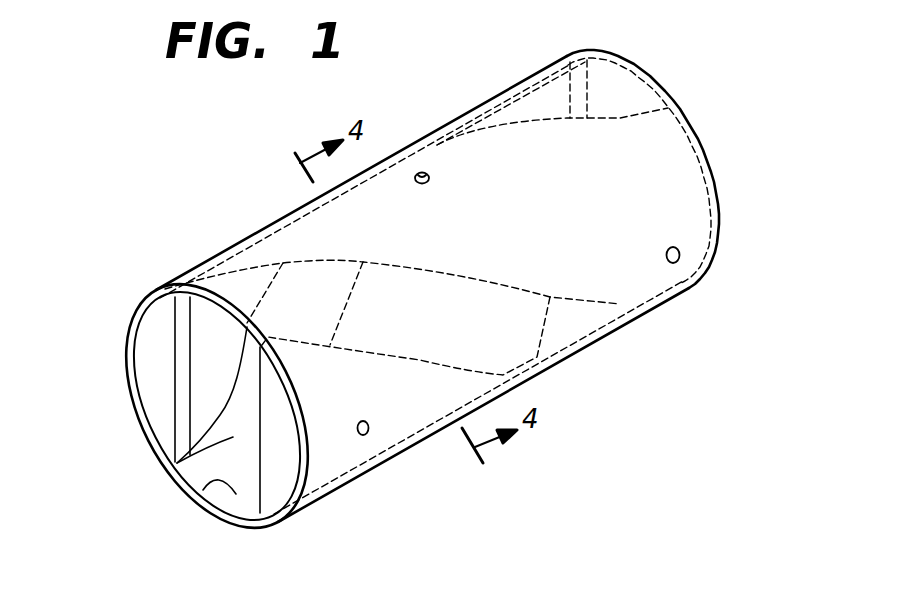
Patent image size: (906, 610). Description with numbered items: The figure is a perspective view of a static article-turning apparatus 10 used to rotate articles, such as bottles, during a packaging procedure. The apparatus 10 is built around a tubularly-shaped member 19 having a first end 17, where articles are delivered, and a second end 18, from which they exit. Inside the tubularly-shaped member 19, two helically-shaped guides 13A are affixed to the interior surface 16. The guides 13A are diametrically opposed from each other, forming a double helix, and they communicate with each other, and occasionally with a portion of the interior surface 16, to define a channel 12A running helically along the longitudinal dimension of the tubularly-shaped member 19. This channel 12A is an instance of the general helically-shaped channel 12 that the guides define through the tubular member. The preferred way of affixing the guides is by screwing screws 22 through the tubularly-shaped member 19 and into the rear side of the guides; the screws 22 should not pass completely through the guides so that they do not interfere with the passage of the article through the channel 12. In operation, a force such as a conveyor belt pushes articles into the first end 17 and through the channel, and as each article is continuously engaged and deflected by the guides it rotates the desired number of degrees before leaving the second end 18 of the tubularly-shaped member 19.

The static article-turning apparatus 10 is at (145, 213).
The helically-shaped channel 12 is at (570, 327).
The channel 12A is at (177, 472).
The guides 13A is at (153, 364).
The interior surface of the tubularly-shaped member 16 is at (208, 486).
The first end 17 is at (140, 305).
The second end 18 is at (711, 161).
The tubularly-shaped member 19 is at (243, 238).
The screws 22 is at (368, 431).